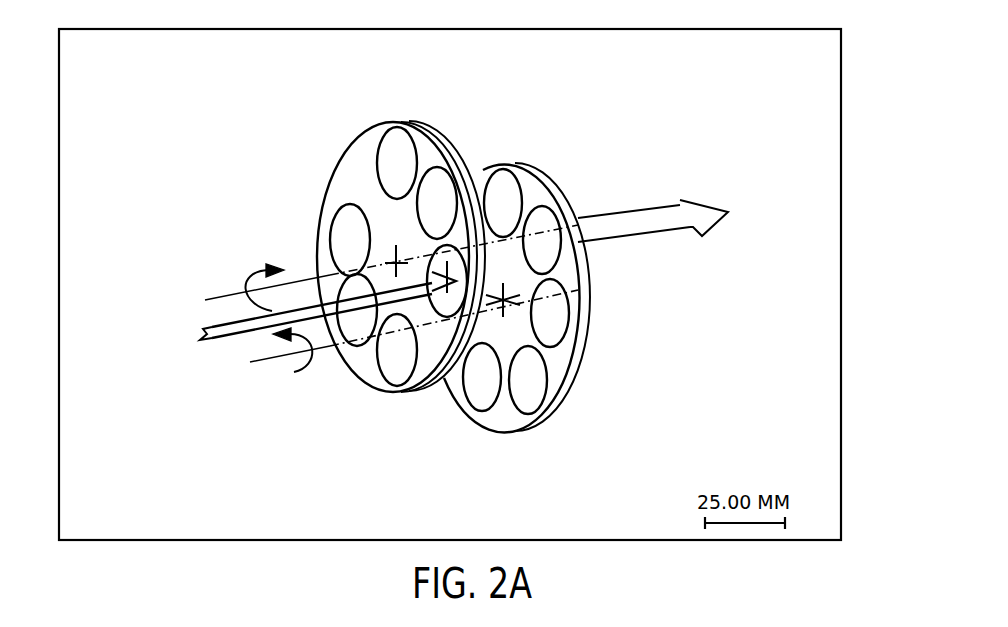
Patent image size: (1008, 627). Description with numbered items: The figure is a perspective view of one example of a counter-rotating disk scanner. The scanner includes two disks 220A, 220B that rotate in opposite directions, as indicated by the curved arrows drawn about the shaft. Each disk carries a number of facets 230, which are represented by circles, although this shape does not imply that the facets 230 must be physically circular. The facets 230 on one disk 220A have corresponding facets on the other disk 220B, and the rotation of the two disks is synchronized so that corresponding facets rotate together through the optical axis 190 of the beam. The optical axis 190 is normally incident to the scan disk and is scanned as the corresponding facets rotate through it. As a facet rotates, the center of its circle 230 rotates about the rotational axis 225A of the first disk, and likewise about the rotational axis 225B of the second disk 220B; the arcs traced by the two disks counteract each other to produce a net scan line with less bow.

The optical axis 190 is at (208, 340).
The scan disk 220A is at (362, 382).
The scan disk 220B is at (480, 425).
The rotational axis 225A is at (580, 216).
The rotational axis 225B is at (582, 283).
The facets 230 is at (388, 158).